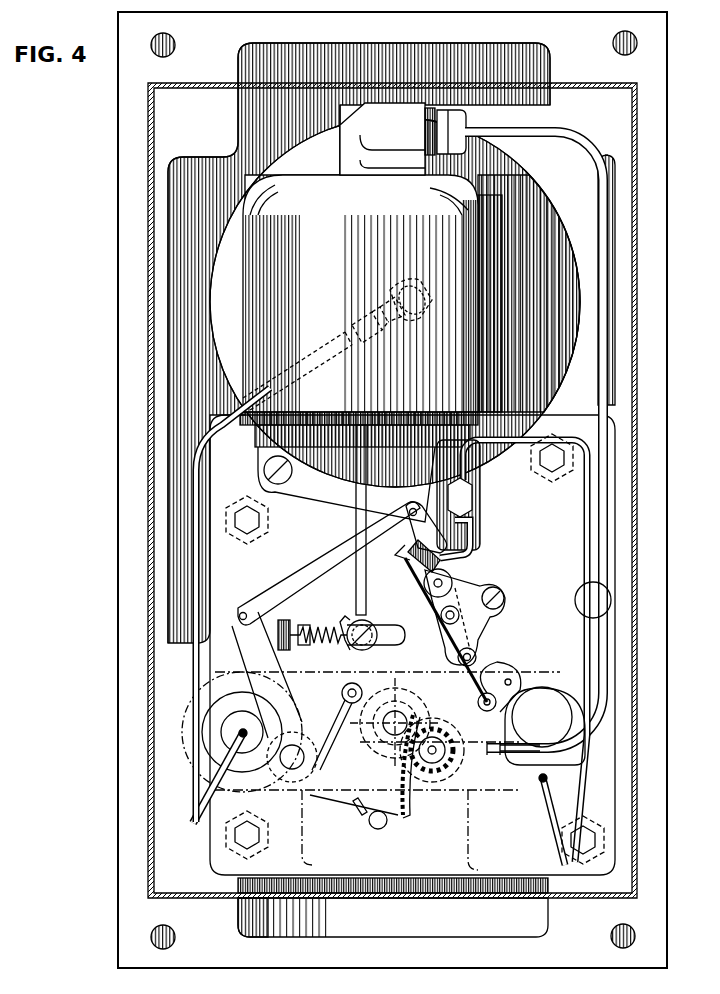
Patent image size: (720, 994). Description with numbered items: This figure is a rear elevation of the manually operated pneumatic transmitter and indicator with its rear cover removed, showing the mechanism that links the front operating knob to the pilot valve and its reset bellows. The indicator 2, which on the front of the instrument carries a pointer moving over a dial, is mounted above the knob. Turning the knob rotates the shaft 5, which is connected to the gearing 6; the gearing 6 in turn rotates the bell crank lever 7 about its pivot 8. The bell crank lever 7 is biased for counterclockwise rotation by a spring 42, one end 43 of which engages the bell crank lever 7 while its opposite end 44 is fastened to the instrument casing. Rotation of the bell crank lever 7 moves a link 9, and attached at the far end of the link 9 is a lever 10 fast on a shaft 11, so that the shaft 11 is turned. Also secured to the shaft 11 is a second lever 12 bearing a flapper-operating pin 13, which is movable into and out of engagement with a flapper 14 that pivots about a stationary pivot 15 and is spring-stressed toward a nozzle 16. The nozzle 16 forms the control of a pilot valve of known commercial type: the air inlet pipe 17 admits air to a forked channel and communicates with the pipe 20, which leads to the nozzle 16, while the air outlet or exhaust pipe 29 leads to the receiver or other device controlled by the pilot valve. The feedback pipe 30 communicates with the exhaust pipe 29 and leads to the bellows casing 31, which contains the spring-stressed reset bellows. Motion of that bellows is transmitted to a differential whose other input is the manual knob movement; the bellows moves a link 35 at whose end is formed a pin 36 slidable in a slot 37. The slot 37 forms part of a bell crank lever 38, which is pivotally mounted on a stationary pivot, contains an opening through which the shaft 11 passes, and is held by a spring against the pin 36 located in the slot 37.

The indicator 2 is at (535, 190).
The shaft 5 is at (397, 720).
The gearing 6 is at (423, 717).
The bell crank lever 7 is at (248, 650).
The pivot 8 is at (292, 760).
The link 9 is at (297, 575).
The lever 10 is at (410, 510).
The shaft 11 is at (450, 578).
The second lever 12 is at (462, 625).
The flapper-operating pin 13 is at (476, 657).
The flapper 14 is at (446, 642).
The stationary pivot 15 is at (480, 708).
The nozzle 16 is at (415, 553).
The air inlet pipe 17 is at (555, 684).
The pipe 20 is at (488, 462).
The exhaust pipe 29 is at (393, 750).
The feedback pipe 30 is at (580, 135).
The bellows casing 31 is at (480, 232).
The link 35 is at (366, 468).
The pin 36 is at (368, 650).
The slot 37 is at (388, 617).
The bell crank lever 38 is at (337, 620).
The spring 42 is at (340, 703).
The end 43 is at (360, 812).
The opposite end 44 is at (343, 688).